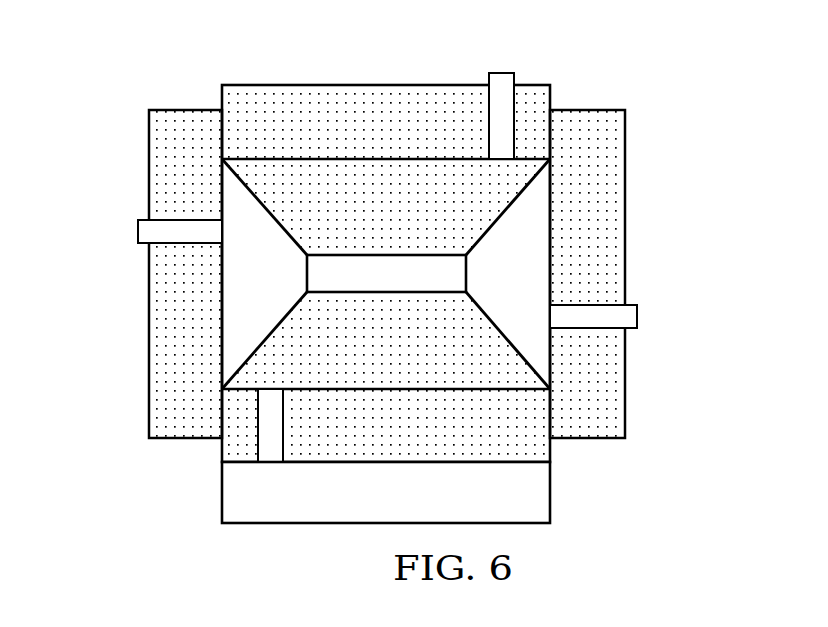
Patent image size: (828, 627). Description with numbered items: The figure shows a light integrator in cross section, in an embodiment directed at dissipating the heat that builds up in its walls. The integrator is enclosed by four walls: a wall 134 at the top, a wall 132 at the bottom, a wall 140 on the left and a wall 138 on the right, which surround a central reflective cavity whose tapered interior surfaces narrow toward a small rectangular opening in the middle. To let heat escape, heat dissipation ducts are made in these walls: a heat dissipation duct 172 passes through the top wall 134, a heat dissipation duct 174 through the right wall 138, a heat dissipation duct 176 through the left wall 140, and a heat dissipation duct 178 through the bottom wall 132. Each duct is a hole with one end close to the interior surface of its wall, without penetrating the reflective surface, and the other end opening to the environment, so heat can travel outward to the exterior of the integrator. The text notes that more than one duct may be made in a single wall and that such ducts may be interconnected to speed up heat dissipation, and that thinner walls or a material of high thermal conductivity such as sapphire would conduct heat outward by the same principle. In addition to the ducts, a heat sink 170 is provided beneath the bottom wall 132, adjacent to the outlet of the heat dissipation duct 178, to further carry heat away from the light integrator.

The wall 132 is at (364, 440).
The wall 134 is at (364, 137).
The wall 138 is at (555, 263).
The wall 140 is at (213, 263).
The heat sink 170 is at (258, 525).
The heat dissipation duct 172 is at (500, 72).
The heat dissipation duct 174 is at (637, 318).
The heat dissipation duct 176 is at (138, 232).
The heat dissipation duct 178 is at (270, 475).